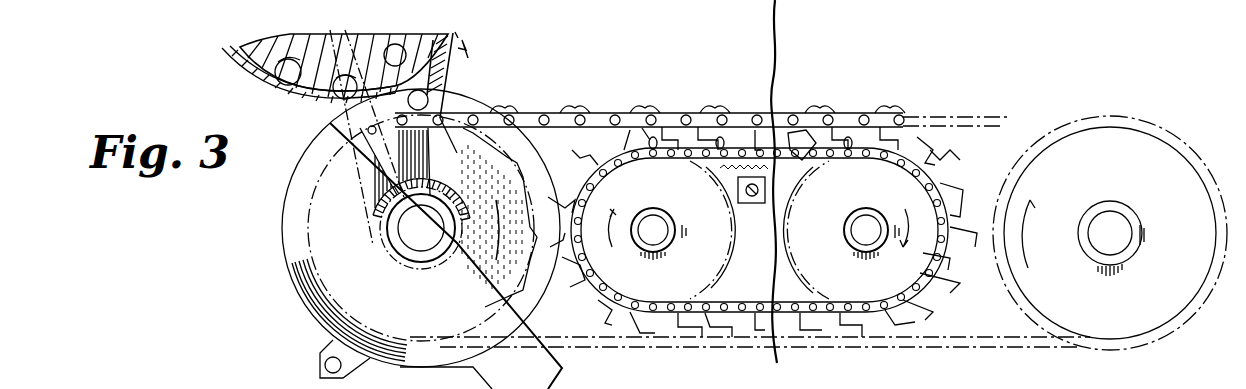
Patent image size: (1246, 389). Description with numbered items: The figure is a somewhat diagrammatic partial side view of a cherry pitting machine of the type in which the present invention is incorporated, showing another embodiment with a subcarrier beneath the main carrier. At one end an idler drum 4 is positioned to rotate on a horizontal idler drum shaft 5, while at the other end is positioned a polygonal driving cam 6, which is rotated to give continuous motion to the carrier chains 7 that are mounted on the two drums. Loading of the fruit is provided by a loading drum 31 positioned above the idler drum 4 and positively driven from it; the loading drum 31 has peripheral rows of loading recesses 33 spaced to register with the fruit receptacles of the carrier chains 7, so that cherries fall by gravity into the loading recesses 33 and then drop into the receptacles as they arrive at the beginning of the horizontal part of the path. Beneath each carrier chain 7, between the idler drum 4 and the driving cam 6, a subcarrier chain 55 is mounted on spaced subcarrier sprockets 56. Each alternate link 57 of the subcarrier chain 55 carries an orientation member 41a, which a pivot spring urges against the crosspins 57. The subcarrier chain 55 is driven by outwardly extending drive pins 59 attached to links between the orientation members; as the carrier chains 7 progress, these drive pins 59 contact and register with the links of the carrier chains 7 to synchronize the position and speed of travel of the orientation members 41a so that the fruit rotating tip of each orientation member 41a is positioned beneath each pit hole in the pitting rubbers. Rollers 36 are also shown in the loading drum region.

The idler drum 4 is at (430, 158).
The idler drum shaft 5 is at (413, 222).
The polygonal driving cam 6 is at (1135, 178).
The carrier chains 7 is at (626, 102).
The loading drum 31 is at (240, 47).
The loading recesses 33 is at (248, 80).
The guide rollers 36 is at (312, 105).
The orientation member 41a is at (808, 132).
The subcarrier chain 55 is at (744, 160).
The subcarrier sprockets 56 is at (706, 217).
The link 57 is at (636, 130).
The drive pins 59 is at (575, 150).